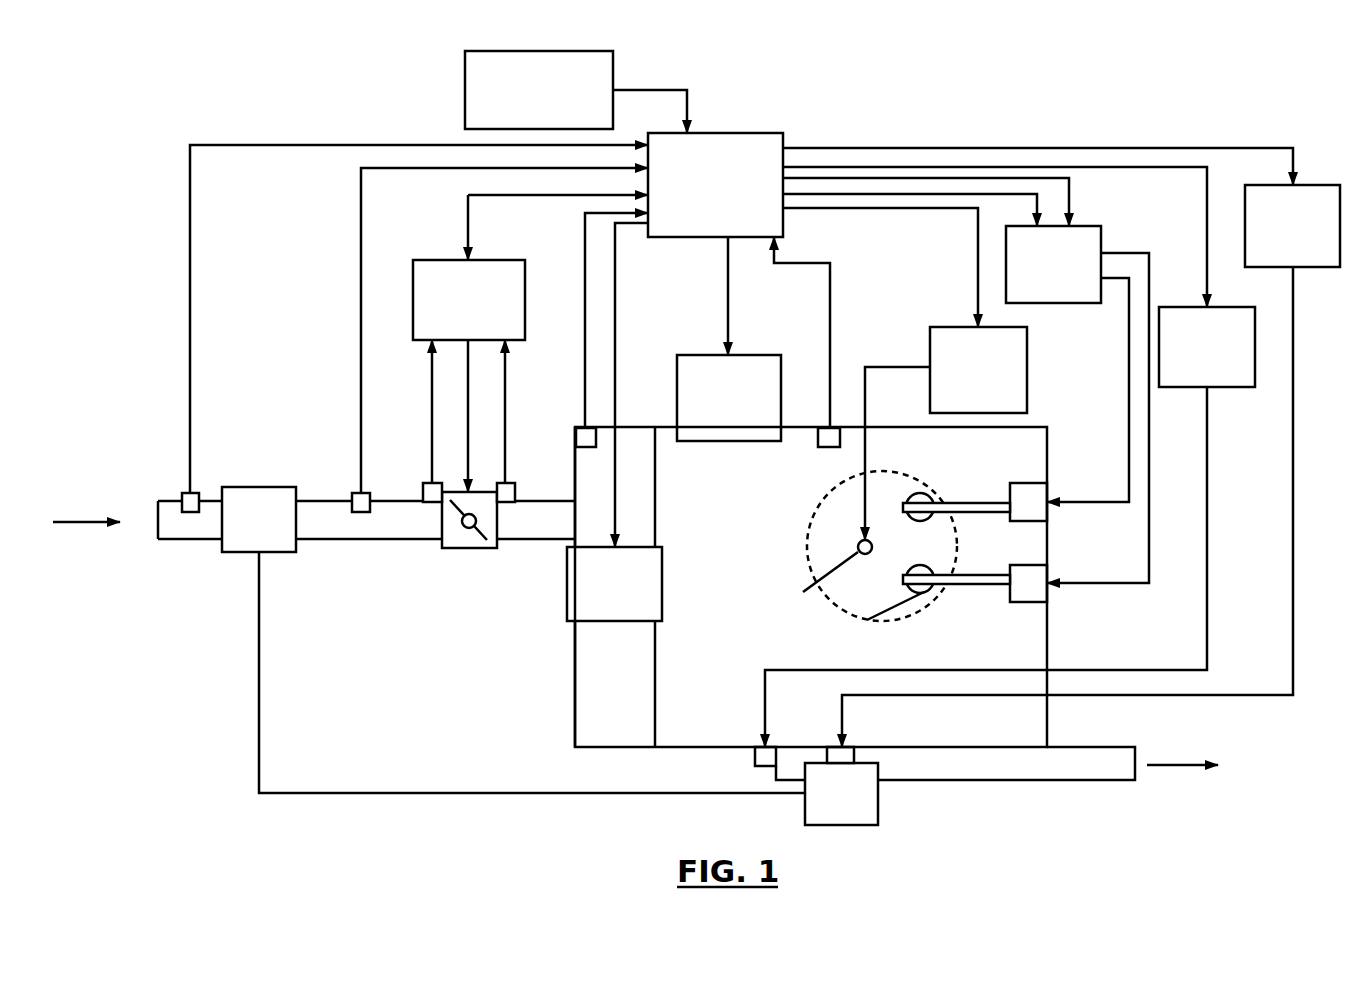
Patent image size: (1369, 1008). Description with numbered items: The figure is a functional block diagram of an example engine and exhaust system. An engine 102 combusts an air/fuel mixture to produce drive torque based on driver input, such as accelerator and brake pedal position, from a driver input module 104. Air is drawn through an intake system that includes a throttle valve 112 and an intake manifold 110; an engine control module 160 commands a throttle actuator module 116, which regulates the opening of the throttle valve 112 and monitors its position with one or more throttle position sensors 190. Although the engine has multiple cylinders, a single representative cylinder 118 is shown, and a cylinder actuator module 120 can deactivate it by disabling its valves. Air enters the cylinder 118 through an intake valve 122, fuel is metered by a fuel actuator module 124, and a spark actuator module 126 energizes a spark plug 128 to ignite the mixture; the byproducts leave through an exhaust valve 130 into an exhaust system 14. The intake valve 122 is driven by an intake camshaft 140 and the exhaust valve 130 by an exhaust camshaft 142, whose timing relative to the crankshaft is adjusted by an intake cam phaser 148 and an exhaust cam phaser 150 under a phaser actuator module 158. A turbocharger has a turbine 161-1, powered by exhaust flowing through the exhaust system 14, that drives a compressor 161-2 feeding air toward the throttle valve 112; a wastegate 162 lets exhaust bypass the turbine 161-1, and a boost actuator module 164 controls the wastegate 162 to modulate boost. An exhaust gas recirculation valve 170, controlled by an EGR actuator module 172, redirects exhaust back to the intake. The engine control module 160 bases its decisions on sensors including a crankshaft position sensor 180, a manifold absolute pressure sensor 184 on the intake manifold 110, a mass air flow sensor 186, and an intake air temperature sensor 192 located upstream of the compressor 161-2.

The exhaust system 14 is at (1118, 828).
The engine 102 is at (1047, 440).
The driver input module 104 is at (465, 89).
The intake manifold 110 is at (575, 672).
The throttle valve 112 is at (464, 549).
The throttle actuator module 116 is at (438, 260).
The cylinder 118 is at (842, 607).
The cylinder actuator module 120 is at (753, 355).
The intake valve 122 is at (922, 497).
The fuel actuator module 124 is at (633, 622).
The spark actuator module 126 is at (1027, 367).
The spark plug 128 is at (803, 592).
The exhaust valve 130 is at (867, 620).
The intake camshaft 140 is at (978, 503).
The exhaust camshaft 142 is at (983, 587).
The intake cam phaser 148 is at (1025, 483).
The exhaust cam phaser 150 is at (1028, 603).
The phaser actuator module 158 is at (1102, 237).
The engine control module 160 is at (785, 139).
The turbine 161-1 is at (878, 800).
The compressor 161-2 is at (240, 553).
The wastegate 162 is at (855, 755).
The boost actuator module 164 is at (1315, 268).
The exhaust gas recirculation valve 170 is at (762, 767).
The EGR actuator module 172 is at (1230, 388).
The crankshaft position sensor 180 is at (828, 447).
The manifold absolute pressure sensor 184 is at (578, 428).
The mass air flow sensor 186 is at (352, 494).
The throttle position sensors 190 is at (425, 503).
The intake air temperature sensor 192 is at (182, 497).